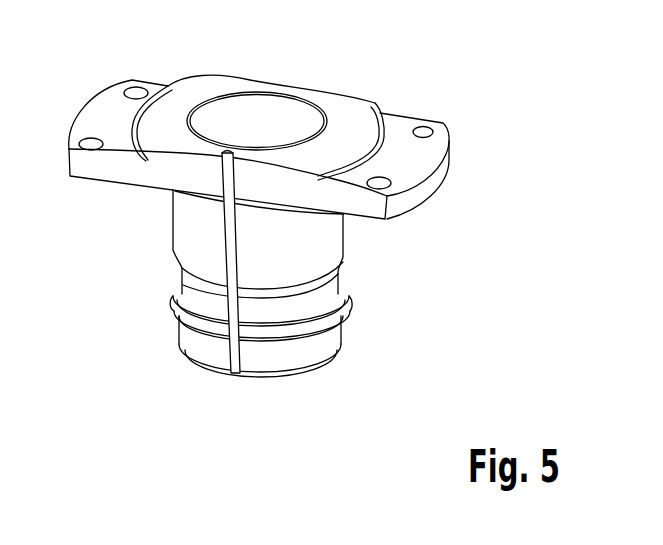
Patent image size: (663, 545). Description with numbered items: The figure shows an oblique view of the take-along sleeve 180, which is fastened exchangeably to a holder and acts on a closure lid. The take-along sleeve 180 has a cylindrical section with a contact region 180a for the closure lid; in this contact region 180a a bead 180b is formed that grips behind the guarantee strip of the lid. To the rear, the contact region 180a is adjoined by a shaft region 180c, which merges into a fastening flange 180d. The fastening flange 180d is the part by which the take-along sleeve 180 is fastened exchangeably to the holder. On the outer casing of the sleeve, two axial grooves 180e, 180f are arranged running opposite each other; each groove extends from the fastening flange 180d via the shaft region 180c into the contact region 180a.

The take-along sleeve 180 is at (295, 221).
The contact region 180a is at (362, 279).
The bead 180b is at (176, 313).
The shaft region 180c is at (185, 238).
The fastening flange 180d is at (356, 100).
The axial groove 180e is at (232, 366).
The axial groove 180f is at (290, 90).